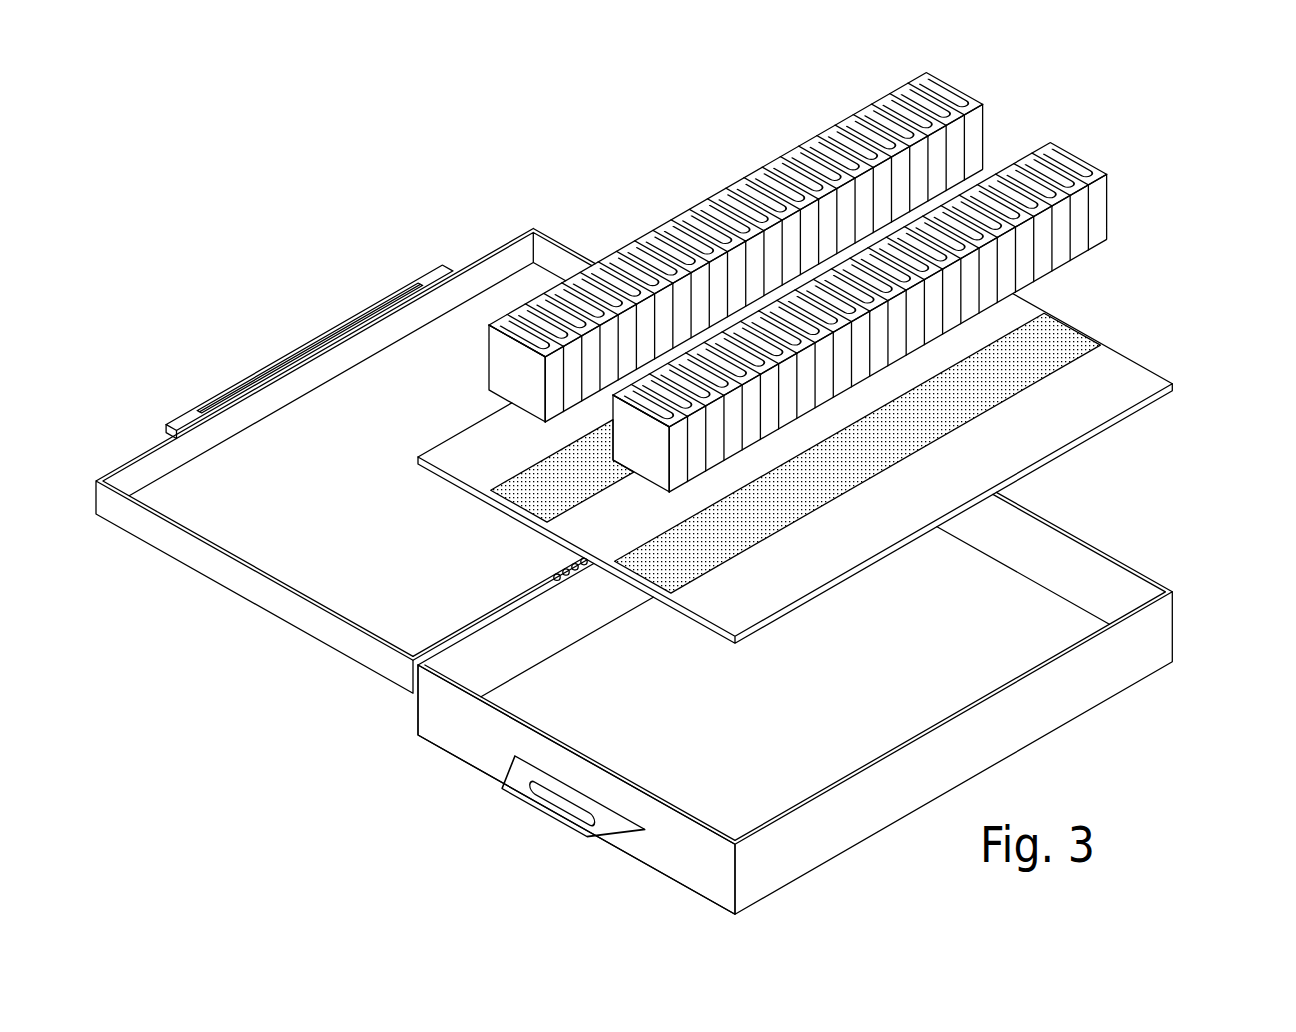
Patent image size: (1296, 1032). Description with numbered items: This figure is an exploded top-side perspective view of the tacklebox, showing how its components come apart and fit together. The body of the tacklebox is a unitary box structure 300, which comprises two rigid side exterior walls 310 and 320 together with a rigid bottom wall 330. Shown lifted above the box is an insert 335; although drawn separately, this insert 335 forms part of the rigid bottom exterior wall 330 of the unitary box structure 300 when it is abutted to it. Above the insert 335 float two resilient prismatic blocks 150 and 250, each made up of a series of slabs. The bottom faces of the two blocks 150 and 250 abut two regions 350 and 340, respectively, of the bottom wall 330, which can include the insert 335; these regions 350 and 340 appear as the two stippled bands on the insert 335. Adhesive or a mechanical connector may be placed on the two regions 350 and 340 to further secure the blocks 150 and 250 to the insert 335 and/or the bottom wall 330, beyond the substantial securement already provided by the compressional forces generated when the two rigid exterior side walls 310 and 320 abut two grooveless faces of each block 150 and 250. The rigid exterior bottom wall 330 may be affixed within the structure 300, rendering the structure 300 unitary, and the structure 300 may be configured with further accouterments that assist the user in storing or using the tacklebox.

The resilient prismatic block 150 is at (960, 90).
The resilient prismatic block 250 is at (1082, 167).
The unitary box structure 300 is at (1087, 693).
The rigid side exterior wall 310 is at (473, 712).
The rigid side exterior wall 320 is at (1040, 553).
The rigid bottom wall 330 is at (723, 772).
The insert 335 is at (1133, 360).
The region of the bottom wall 340 is at (1050, 340).
The region of the bottom wall 350 is at (532, 493).